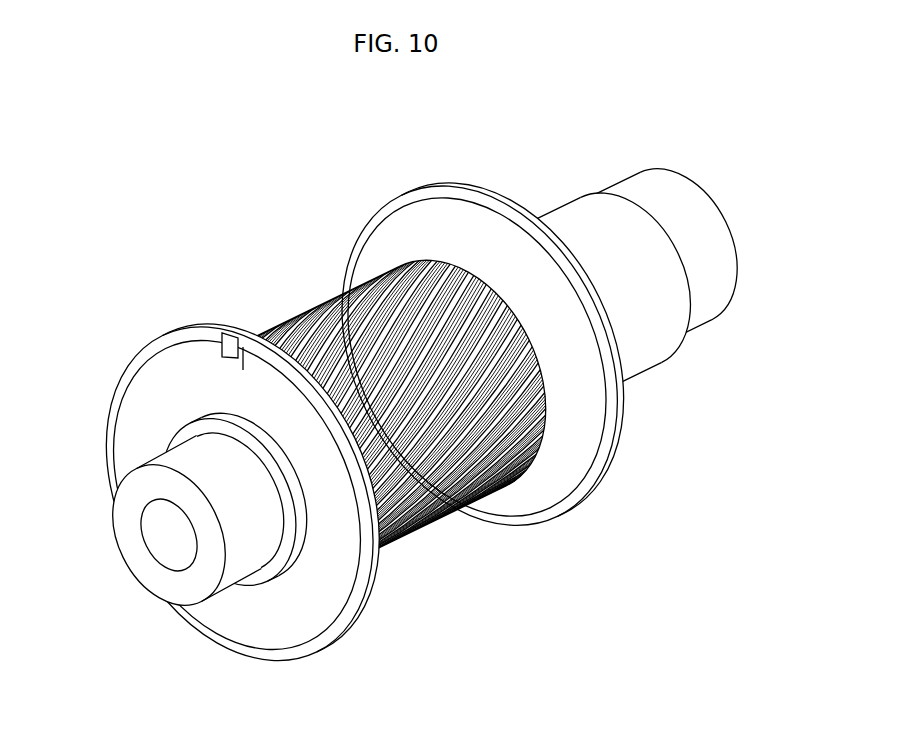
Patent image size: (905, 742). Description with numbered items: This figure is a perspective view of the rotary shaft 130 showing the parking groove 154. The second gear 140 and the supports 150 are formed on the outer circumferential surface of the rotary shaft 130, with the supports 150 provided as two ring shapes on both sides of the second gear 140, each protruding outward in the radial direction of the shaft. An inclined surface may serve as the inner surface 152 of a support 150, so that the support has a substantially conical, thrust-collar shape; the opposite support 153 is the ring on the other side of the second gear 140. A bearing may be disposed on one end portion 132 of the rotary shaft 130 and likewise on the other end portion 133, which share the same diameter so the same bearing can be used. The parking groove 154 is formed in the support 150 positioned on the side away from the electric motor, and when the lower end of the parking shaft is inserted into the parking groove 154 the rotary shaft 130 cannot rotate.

The rotary shaft 130 is at (608, 256).
The one end portion 132 is at (243, 558).
The rear end cap 133 is at (705, 296).
The second gear 140 is at (437, 560).
The supports 150 is at (452, 371).
The inner surface 152 is at (560, 490).
The front flange 153 is at (224, 493).
The parking groove 154 is at (234, 344).